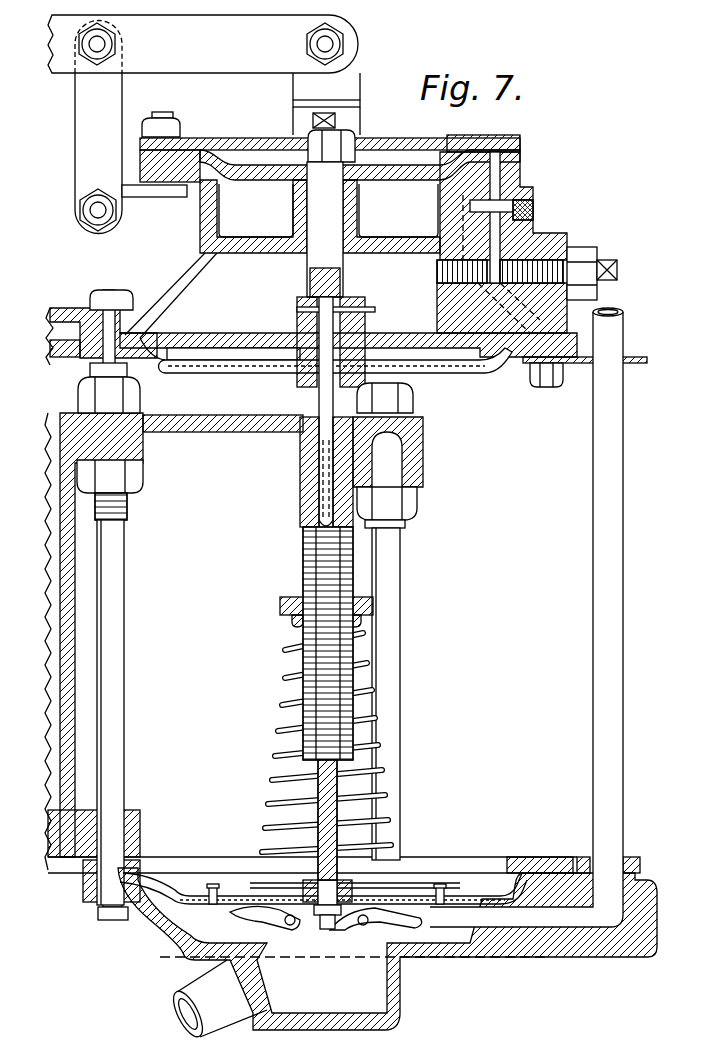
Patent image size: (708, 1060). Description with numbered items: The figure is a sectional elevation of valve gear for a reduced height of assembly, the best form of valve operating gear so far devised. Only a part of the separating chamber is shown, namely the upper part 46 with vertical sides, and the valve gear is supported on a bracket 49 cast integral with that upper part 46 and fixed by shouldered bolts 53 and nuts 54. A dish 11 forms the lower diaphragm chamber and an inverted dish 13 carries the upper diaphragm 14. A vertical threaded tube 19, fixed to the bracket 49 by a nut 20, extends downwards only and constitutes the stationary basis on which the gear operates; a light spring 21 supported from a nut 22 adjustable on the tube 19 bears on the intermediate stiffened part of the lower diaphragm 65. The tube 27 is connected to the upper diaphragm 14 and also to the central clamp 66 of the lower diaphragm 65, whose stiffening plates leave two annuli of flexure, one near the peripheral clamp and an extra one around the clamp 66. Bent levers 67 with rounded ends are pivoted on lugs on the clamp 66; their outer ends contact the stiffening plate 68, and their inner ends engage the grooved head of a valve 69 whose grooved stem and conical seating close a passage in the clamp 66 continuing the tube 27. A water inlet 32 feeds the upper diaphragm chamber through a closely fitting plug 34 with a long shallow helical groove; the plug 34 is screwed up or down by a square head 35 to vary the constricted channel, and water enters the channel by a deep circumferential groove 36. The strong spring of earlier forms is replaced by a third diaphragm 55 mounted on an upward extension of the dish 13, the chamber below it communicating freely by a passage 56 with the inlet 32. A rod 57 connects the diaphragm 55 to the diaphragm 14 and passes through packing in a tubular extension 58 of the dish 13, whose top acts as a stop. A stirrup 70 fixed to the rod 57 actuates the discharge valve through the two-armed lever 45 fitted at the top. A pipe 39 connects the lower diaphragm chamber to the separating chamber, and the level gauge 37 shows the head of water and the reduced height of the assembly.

The dish 11 is at (177, 943).
The inverted dish 13 is at (187, 278).
The upper diaphragm 14 is at (233, 355).
The threaded tube 19 is at (303, 502).
The nut 20 is at (293, 452).
The light spring 21 is at (280, 758).
The nut 22 is at (281, 612).
The tube 27 is at (278, 797).
The water inlet 32 is at (533, 211).
The plug 34 is at (437, 281).
The square head 35 is at (603, 258).
The circumferential groove 36 is at (493, 292).
The water level gauge 37 is at (593, 599).
The pipe 39 is at (217, 1000).
The two-armed lever 45 is at (222, 57).
The upper part of separating chamber 46 is at (73, 595).
The bracket 49 is at (215, 434).
The shouldered bolts 53 is at (118, 670).
The nuts 54 is at (120, 302).
The third diaphragm 55 is at (400, 180).
The passage 56 is at (455, 208).
The rod 57 is at (317, 263).
The tubular extension 58 is at (357, 229).
The lower diaphragm 65 is at (323, 901).
The central clamp 66 is at (353, 922).
The bent levers 67 is at (267, 920).
The stiffening plate 68 is at (212, 905).
The valve 69 is at (313, 912).
The stirrup 70 is at (350, 95).